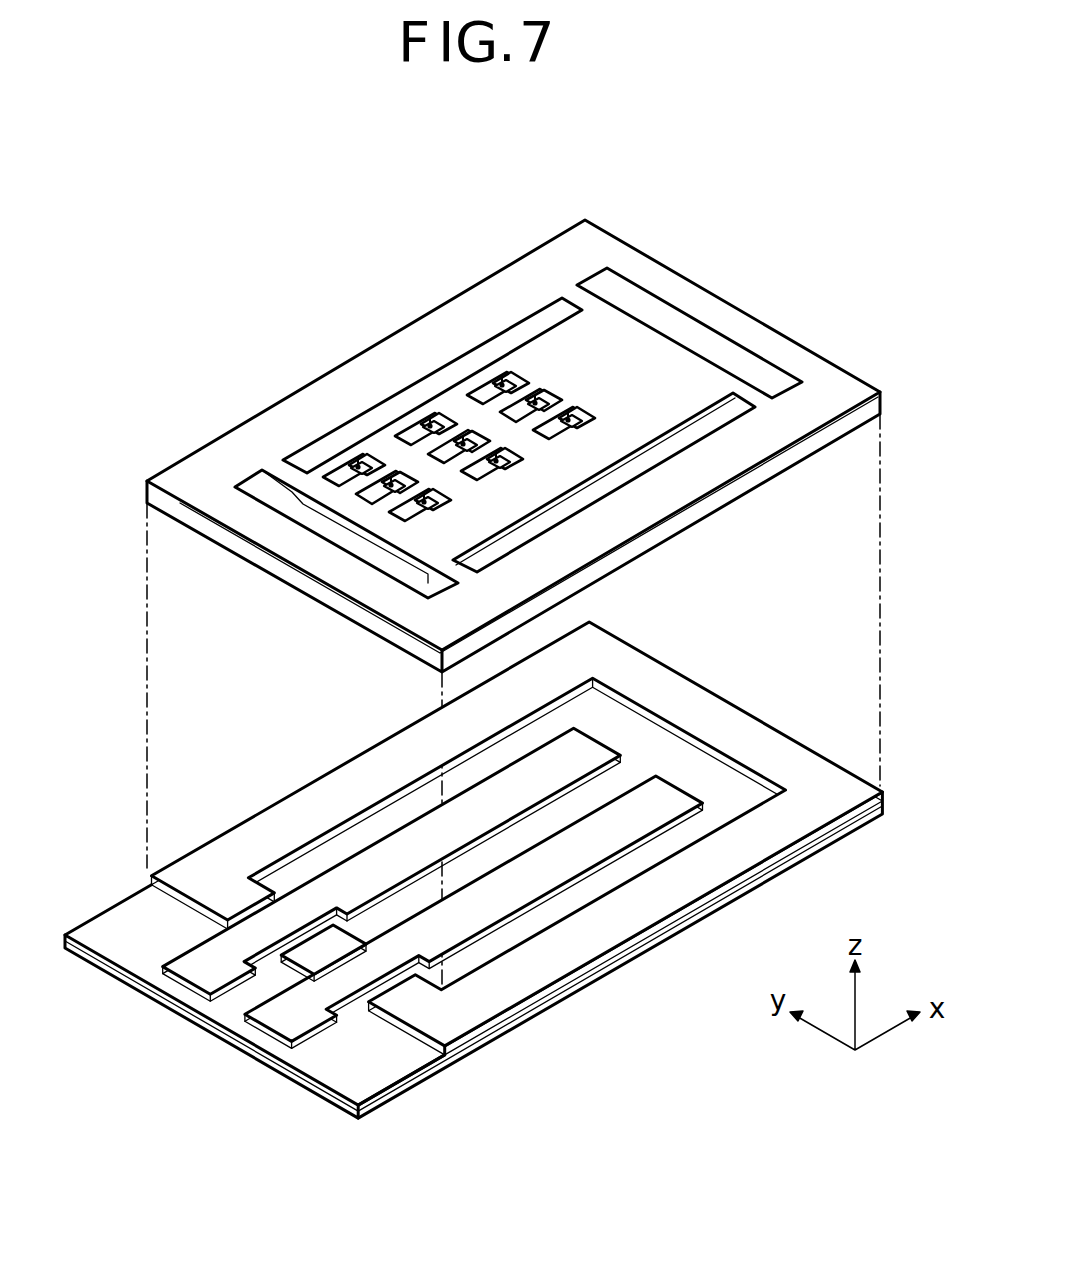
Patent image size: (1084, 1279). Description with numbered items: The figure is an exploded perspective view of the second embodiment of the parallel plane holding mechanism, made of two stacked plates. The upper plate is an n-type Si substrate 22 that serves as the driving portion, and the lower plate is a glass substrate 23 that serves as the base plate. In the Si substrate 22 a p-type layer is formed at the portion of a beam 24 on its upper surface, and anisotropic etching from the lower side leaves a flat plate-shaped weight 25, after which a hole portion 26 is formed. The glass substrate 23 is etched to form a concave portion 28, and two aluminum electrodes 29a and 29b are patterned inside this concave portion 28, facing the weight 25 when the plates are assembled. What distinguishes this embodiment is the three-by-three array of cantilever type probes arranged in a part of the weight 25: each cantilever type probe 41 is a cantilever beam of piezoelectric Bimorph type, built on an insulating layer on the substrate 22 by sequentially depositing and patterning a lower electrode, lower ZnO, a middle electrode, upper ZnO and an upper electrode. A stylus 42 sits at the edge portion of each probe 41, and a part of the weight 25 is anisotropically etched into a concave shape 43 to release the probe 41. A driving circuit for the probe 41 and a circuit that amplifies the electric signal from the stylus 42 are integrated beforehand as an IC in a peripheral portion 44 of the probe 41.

The Si substrate 22 is at (808, 447).
The glass substrate 23 is at (850, 820).
The beam 24 is at (753, 397).
The weight 25 is at (712, 382).
The hole portion 26 is at (694, 337).
The concave portion 28 is at (688, 762).
The aluminum electrode 29a is at (388, 857).
The aluminum electrode 29b is at (567, 852).
The cantilever type probe 41 is at (518, 384).
The stylus 42 is at (483, 397).
The concave shape 43 is at (500, 384).
The peripheral portion 44 is at (532, 383).